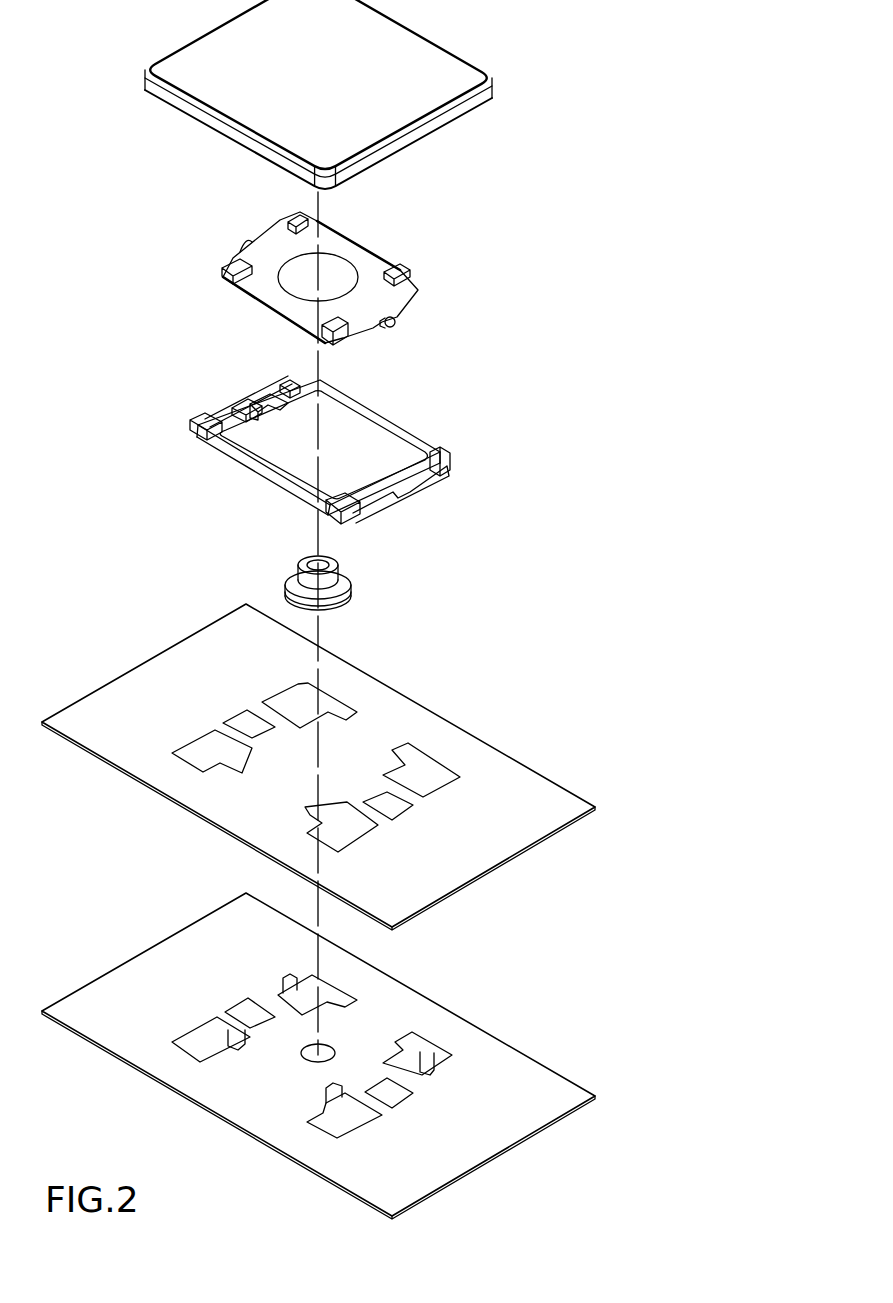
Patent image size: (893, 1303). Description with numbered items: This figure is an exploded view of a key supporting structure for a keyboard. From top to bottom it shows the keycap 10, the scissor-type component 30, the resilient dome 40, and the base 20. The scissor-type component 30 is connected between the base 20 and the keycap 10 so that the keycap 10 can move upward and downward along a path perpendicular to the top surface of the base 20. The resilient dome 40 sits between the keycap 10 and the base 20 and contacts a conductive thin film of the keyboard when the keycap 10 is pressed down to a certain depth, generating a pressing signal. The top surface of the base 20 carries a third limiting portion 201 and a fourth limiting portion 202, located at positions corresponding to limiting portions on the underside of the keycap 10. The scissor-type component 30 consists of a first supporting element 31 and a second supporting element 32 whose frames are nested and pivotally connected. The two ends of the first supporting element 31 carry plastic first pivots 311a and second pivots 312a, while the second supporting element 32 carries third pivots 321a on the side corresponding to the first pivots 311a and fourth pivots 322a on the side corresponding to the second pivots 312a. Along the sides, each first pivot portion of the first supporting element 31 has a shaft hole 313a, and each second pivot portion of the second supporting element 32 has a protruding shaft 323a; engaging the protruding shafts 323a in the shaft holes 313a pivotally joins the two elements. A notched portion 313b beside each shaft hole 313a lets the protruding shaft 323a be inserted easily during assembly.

The keycap 10 is at (478, 56).
The base 20 is at (318, 1056).
The third limiting portion 201 is at (332, 1083).
The fourth limiting portion 202 is at (428, 1060).
The scissor-type component 30 is at (97, 250).
The first supporting element 31 is at (315, 435).
The first pivots 311a is at (200, 417).
The second pivots 312a is at (285, 380).
The shaft hole 313a is at (258, 415).
The notched portion 313b is at (250, 405).
The second supporting element 32 is at (291, 277).
The third pivots 321a is at (232, 286).
The fourth pivots 322a is at (302, 215).
The protruding shaft 323a is at (398, 322).
The resilient dome 40 is at (375, 578).